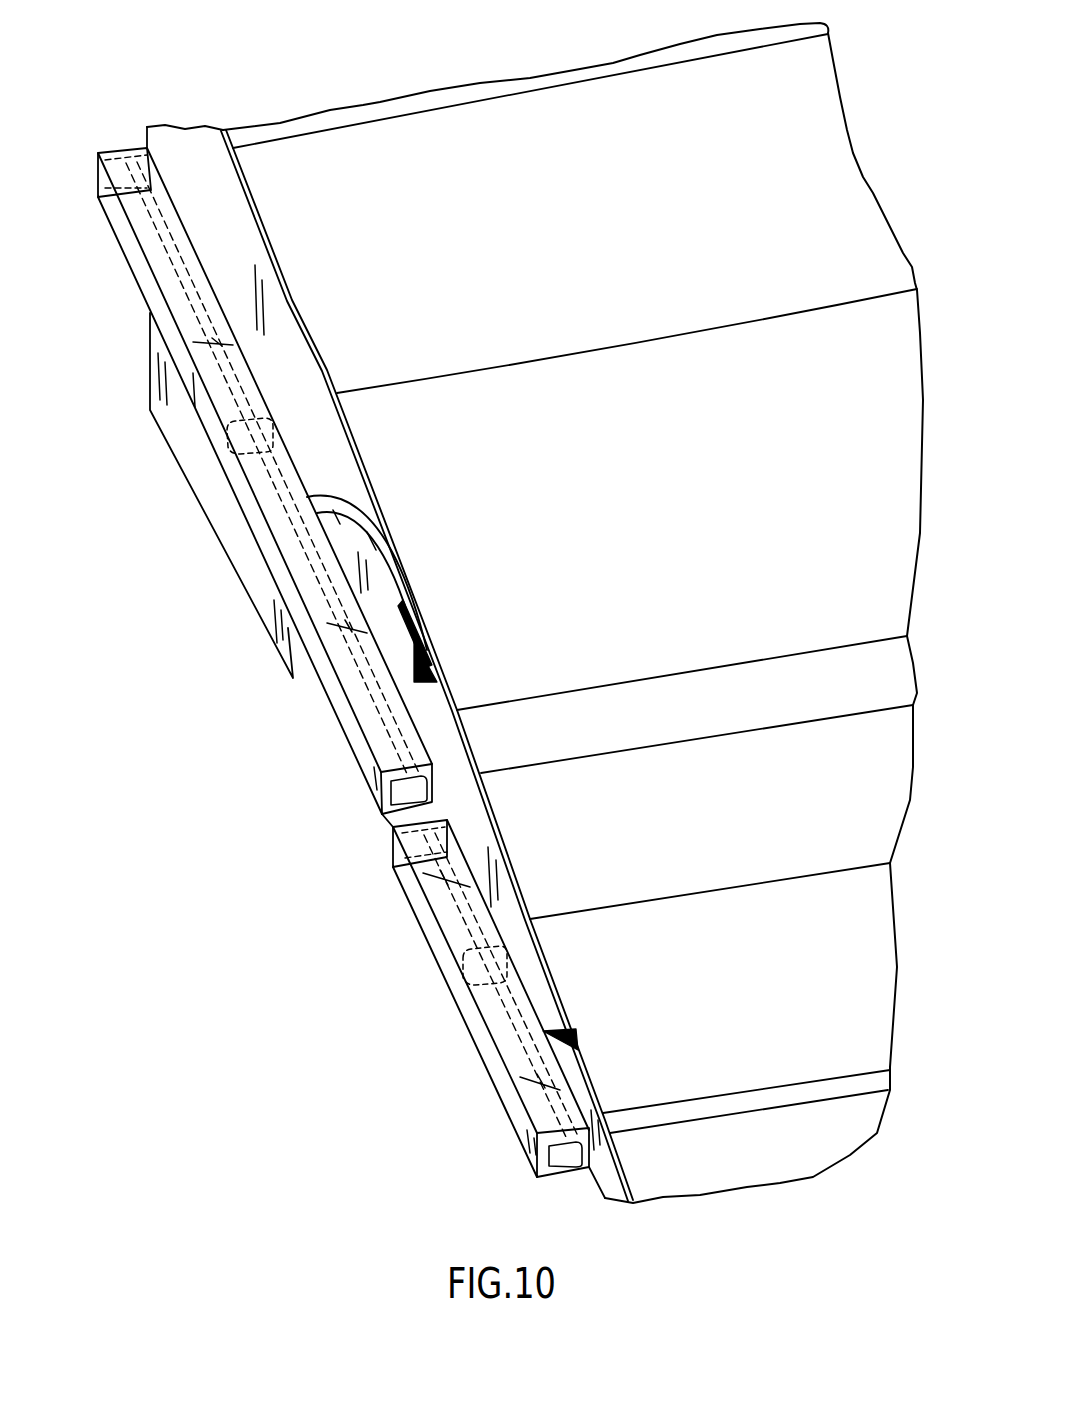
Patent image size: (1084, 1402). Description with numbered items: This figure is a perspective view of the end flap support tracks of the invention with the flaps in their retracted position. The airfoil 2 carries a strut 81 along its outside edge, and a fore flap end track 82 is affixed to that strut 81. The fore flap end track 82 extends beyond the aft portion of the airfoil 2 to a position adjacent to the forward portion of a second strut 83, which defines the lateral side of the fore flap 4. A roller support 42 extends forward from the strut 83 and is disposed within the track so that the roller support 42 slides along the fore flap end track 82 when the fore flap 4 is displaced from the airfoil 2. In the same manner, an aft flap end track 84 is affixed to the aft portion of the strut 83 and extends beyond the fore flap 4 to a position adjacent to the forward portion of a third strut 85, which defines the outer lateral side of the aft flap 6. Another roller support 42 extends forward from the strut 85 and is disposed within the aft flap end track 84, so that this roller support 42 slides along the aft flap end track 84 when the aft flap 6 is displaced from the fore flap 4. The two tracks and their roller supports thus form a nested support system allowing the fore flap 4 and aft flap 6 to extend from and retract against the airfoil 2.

The airfoil 2 is at (624, 252).
The fore flap 4 is at (723, 841).
The aft flap 6 is at (747, 1167).
The roller support 42 is at (252, 448).
The strut 81 is at (246, 252).
The fore flap end track 82 is at (147, 268).
The strut 83 is at (473, 813).
The aft flap end track 84 is at (415, 915).
The strut 85 is at (600, 1170).